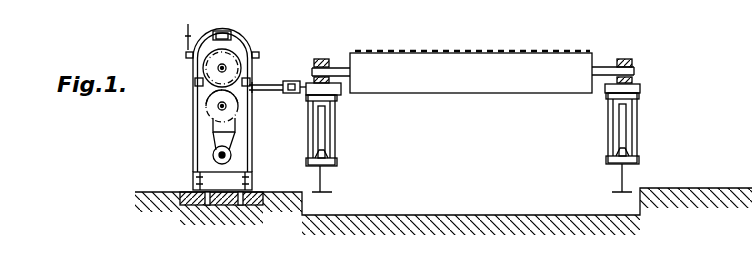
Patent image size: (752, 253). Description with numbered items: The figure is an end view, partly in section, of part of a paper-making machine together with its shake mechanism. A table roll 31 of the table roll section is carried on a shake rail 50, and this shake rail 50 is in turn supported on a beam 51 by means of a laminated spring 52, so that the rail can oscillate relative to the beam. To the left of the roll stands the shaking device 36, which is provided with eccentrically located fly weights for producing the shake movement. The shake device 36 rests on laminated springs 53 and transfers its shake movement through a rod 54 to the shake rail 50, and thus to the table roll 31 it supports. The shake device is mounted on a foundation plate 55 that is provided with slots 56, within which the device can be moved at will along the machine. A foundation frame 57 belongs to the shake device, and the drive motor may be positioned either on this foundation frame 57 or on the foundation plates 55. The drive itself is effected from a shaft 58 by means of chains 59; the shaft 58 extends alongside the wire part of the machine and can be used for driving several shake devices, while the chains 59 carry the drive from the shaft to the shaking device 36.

The table roll 31 is at (466, 63).
The shaking device 36 is at (213, 103).
The shake rail 50 is at (333, 90).
The beam 51 is at (320, 176).
The laminated spring 52 is at (335, 140).
The laminated spring 53 is at (197, 130).
The rod 54 is at (269, 85).
The foundation plate 55 is at (258, 205).
The slot 56 is at (206, 200).
The foundation frame 57 is at (200, 180).
The shaft 58 is at (219, 155).
The chain 59 is at (231, 150).